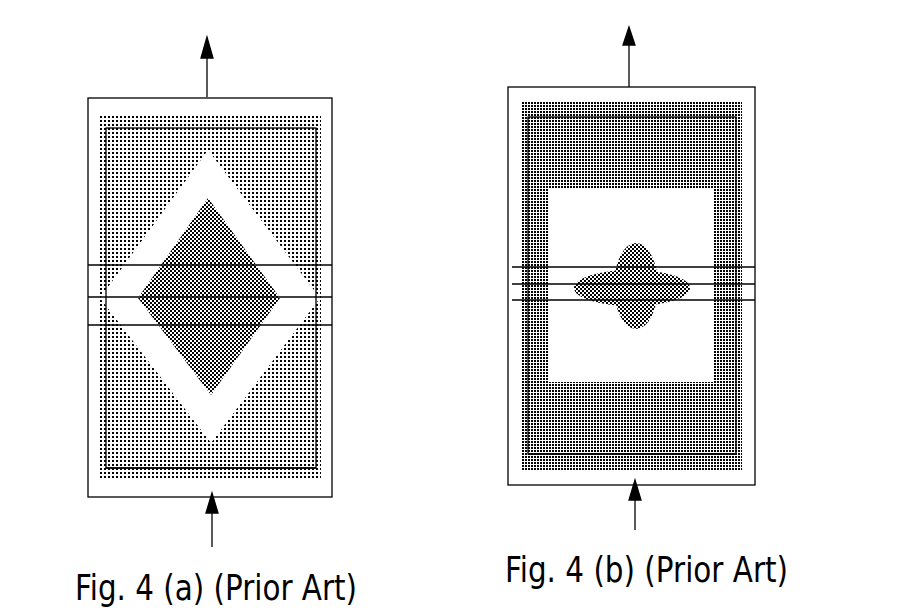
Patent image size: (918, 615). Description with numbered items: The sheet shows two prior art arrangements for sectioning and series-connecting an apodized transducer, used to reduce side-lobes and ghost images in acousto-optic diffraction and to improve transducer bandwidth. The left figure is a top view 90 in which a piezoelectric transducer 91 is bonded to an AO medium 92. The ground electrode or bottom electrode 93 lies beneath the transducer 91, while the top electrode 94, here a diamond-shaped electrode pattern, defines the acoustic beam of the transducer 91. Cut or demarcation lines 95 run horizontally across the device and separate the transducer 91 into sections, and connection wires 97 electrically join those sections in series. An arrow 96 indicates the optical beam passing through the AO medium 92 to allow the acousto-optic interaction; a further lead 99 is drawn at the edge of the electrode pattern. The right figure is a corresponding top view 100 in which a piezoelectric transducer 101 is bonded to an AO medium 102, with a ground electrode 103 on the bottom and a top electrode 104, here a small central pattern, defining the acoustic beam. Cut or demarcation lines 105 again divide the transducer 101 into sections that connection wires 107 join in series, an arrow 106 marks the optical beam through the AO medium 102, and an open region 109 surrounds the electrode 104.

In FIG. 4A, the top view 90 is at (276, 78).
In FIG. 4A, the piezoelectric transducer 91 is at (137, 130).
In FIG. 4A, the AO medium 92 is at (331, 162).
In FIG. 4A, the ground electrode 93 is at (283, 455).
In FIG. 4A, the top electrode 94 is at (232, 233).
In FIG. 4A, the cut or demarcation lines 95 is at (333, 264).
In FIG. 4A, the arrow 96 is at (234, 525).
In FIG. 4A, the connection wires 97 is at (277, 160).
In FIG. 4A, the boundary of region 99 is at (258, 250).
In FIG. 4B, the top view 100 is at (702, 70).
In FIG. 4B, the piezoelectric transducer 101 is at (562, 117).
In FIG. 4B, the AO medium 102 is at (754, 145).
In FIG. 4B, the ground electrode 103 is at (698, 435).
In FIG. 4B, the top electrode 104 is at (653, 255).
In FIG. 4B, the cut or demarcation lines 105 is at (755, 300).
In FIG. 4B, the arrow 106 is at (664, 509).
In FIG. 4B, the connection wires 107 is at (648, 150).
In FIG. 4B, the transparent window 109 is at (665, 342).